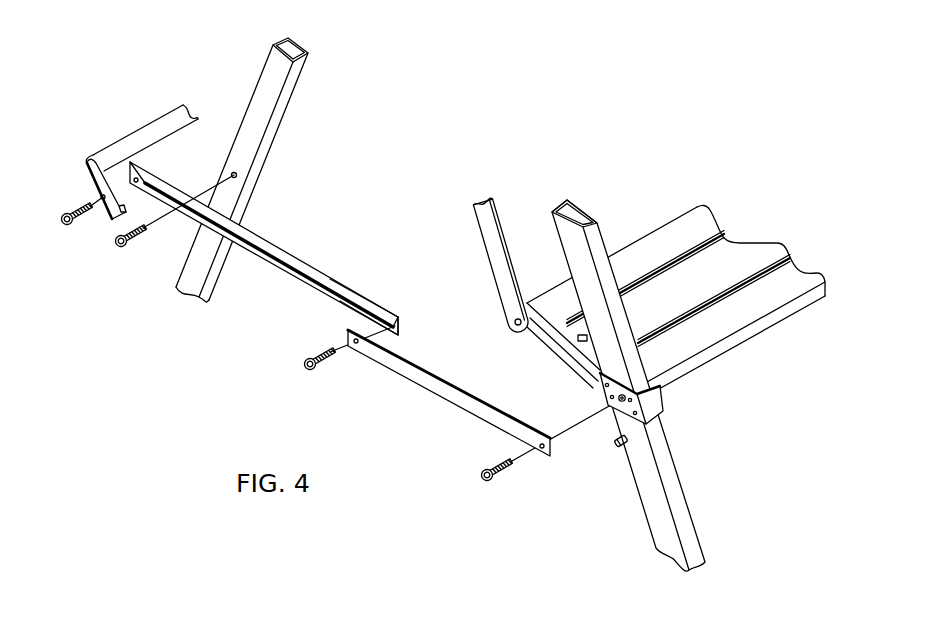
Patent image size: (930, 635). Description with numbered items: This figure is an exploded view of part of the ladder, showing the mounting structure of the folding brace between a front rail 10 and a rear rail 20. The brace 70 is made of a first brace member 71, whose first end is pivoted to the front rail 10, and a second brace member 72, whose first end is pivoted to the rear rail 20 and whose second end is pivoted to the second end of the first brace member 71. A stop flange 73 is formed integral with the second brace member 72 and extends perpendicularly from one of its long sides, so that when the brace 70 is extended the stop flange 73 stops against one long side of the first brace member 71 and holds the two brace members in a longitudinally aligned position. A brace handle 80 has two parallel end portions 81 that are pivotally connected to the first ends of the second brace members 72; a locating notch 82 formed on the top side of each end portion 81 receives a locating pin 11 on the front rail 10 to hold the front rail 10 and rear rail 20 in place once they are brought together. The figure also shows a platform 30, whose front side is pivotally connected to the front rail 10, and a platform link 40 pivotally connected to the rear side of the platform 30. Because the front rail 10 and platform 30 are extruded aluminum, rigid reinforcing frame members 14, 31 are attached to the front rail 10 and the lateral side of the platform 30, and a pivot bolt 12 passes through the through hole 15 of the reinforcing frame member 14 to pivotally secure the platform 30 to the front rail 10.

The front rail 10 is at (683, 501).
The locating pin 11 is at (617, 446).
The pivot bolt 12 is at (503, 482).
The rigid reinforcing frame member 14 is at (654, 405).
The through hole 15 is at (620, 402).
The rear rail 20 is at (274, 134).
The platform 30 is at (656, 238).
The rigid reinforcing frame member 31 is at (546, 324).
The platform link 40 is at (500, 278).
The brace 70 is at (316, 233).
The first brace member 71 is at (407, 371).
The second brace member 72 is at (283, 271).
The stop flange 73 is at (374, 302).
The brace handle 80 is at (130, 135).
The end portion 81 is at (84, 168).
The locating notch 82 is at (112, 216).